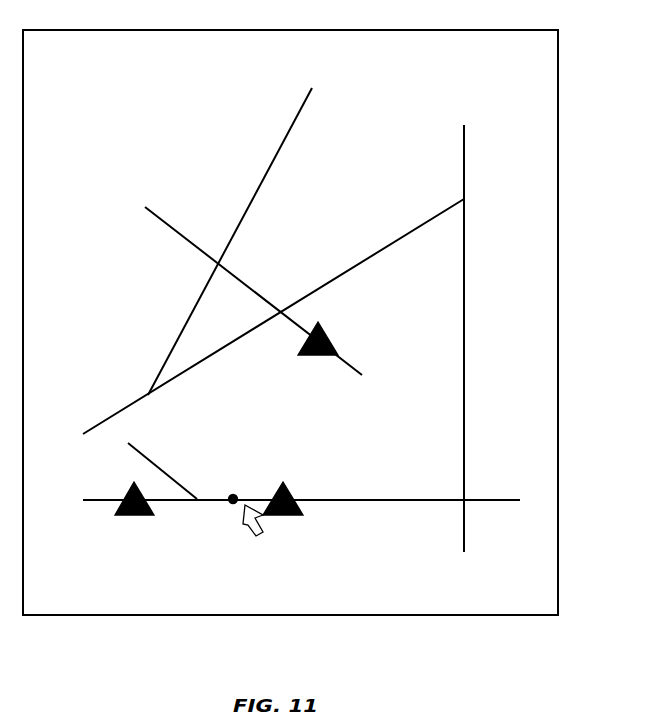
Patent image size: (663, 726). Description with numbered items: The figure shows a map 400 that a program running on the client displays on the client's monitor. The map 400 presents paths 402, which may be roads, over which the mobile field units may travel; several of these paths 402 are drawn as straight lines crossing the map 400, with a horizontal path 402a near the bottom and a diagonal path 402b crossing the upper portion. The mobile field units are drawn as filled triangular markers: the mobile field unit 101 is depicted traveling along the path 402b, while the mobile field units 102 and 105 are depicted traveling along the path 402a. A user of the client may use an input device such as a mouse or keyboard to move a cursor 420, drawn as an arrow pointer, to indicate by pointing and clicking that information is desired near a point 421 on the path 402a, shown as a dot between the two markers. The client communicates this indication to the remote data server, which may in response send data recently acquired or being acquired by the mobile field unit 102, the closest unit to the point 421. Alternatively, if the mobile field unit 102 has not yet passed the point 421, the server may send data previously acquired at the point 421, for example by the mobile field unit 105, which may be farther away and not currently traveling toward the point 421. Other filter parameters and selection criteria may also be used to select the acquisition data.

The map 400 is at (331, 322).
The paths 402 is at (308, 320).
The path 402a is at (318, 535).
The path 402b is at (226, 325).
The mobile field unit 101 is at (351, 328).
The mobile field unit 102 is at (300, 528).
The mobile field unit 105 is at (151, 527).
The cursor 420 is at (284, 498).
The point 421 is at (192, 549).